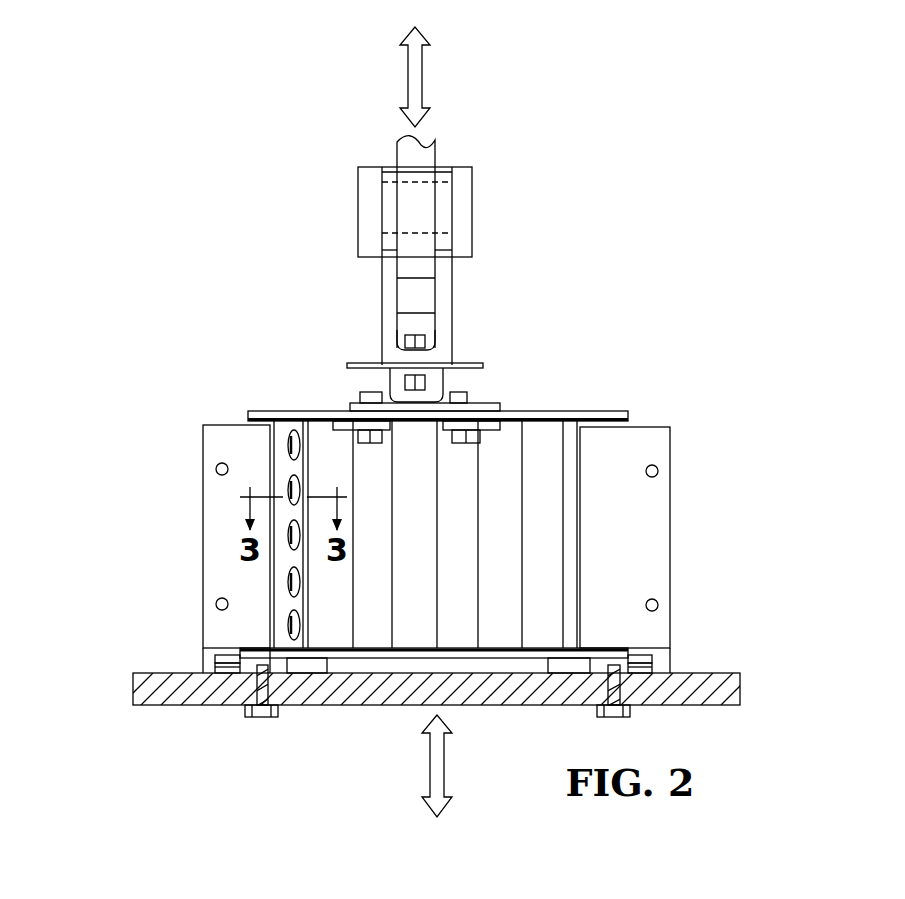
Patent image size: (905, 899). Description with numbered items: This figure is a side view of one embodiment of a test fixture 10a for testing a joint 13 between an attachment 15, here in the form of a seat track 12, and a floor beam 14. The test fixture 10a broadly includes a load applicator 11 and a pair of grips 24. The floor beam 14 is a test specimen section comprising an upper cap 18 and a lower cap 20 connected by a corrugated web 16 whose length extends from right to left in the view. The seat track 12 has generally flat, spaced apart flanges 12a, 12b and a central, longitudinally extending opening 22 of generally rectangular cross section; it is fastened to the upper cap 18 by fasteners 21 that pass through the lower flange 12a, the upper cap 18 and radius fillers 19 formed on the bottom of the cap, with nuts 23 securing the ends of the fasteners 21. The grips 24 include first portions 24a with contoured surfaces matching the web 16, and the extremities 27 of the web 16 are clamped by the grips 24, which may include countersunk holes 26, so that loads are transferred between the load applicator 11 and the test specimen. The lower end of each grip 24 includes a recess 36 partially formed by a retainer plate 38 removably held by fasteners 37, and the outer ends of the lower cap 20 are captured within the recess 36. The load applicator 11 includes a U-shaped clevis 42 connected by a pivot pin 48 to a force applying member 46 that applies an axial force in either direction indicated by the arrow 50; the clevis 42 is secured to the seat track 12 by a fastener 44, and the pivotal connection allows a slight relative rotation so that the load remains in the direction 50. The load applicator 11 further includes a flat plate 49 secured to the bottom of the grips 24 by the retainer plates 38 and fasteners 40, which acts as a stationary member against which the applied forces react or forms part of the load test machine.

The test fixture 10a is at (137, 295).
The load applicator 11 is at (325, 128).
The seat track 12 is at (397, 365).
The lower flange 12a is at (495, 403).
The upper flange 12b is at (467, 365).
The joint 13 is at (510, 400).
The floor beam 14 is at (613, 352).
The attachment 15 is at (300, 295).
The corrugated web 16 is at (530, 517).
The upper cap 18 is at (258, 413).
The radius fillers 19 is at (340, 432).
The lower cap 20 is at (330, 655).
The fasteners 21 is at (362, 397).
The central opening 22 is at (397, 385).
The nuts 23 is at (370, 447).
The grips 24 is at (190, 565).
The first portion of grip 24a is at (228, 527).
The countersunk holes 26 is at (283, 443).
The extremities of the web 27 is at (283, 405).
The recess 36 is at (240, 648).
The fasteners 37 is at (205, 655).
The retainer plates 38 is at (207, 670).
The fasteners 40 is at (262, 717).
The U-shaped clevis 42 is at (383, 264).
The fastener 44 is at (415, 335).
The force applying member 46 is at (418, 155).
The pivot pin 48 is at (462, 210).
The flat plate 49 is at (722, 690).
The direction arrow 50 is at (415, 72).